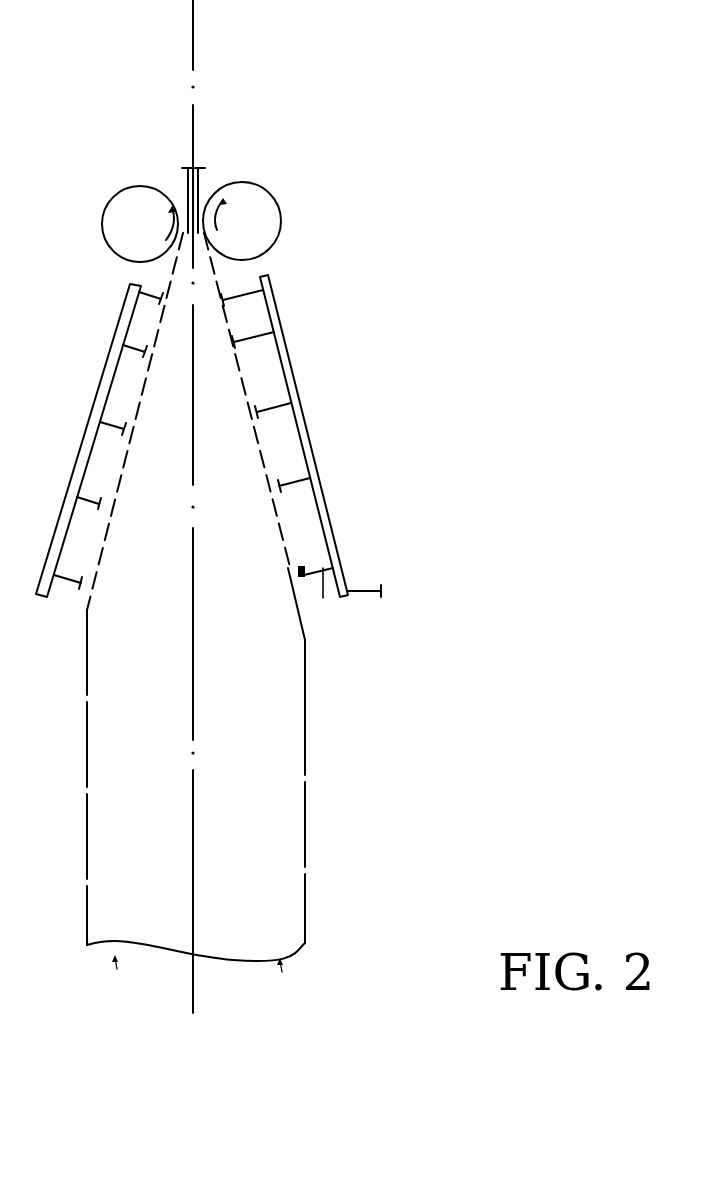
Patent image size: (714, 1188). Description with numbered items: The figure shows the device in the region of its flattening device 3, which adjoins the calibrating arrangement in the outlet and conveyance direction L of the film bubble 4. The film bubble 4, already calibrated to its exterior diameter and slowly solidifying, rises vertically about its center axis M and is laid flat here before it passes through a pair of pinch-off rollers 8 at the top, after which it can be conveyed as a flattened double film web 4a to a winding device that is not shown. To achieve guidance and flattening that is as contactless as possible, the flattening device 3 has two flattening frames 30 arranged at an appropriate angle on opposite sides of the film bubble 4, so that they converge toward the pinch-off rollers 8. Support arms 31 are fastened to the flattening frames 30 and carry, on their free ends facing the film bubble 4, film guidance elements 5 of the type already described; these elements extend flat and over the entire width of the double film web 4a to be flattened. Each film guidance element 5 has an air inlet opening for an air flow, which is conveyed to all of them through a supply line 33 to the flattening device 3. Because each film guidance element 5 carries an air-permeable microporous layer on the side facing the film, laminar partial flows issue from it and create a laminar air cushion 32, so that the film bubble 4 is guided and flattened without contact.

The flattening device 3 is at (232, 455).
The flattening frame 30 is at (327, 485).
The support arm 31 is at (323, 598).
The laminar air cushion 32 is at (293, 575).
The supply line 33 is at (371, 589).
The film bubble 4 is at (307, 915).
The double film web 4a is at (202, 177).
The film guidance element 5 is at (304, 568).
The pair of pinch-off rollers 8 is at (242, 176).
The conveyance direction L is at (205, 976).
The center axis M is at (195, 1003).